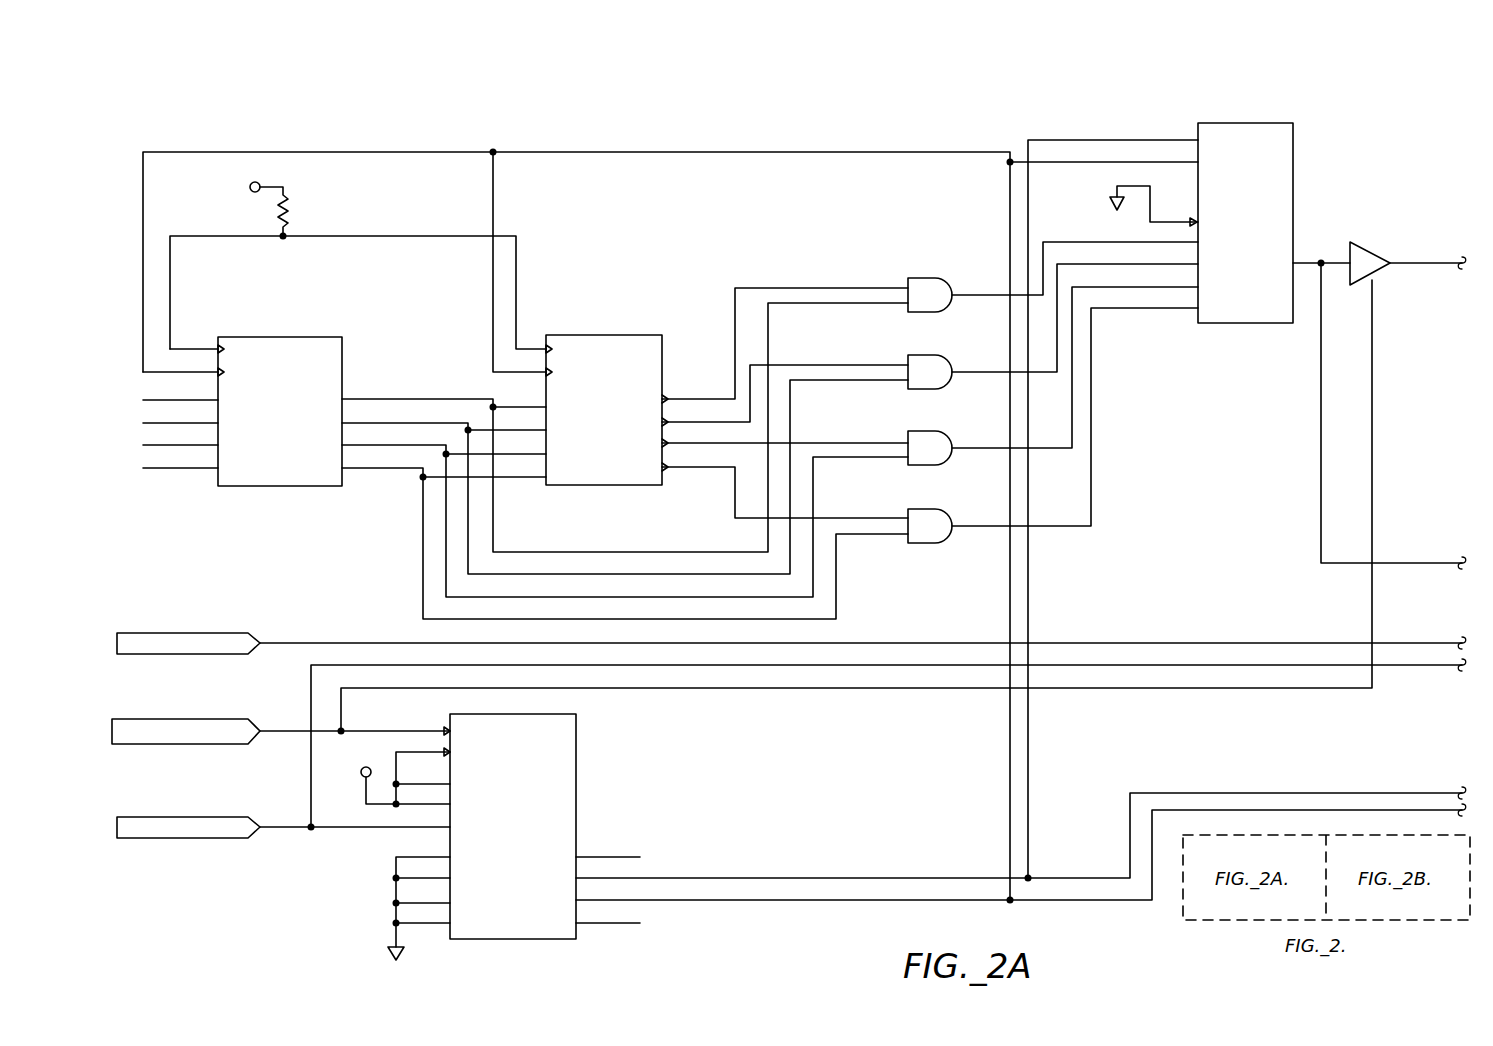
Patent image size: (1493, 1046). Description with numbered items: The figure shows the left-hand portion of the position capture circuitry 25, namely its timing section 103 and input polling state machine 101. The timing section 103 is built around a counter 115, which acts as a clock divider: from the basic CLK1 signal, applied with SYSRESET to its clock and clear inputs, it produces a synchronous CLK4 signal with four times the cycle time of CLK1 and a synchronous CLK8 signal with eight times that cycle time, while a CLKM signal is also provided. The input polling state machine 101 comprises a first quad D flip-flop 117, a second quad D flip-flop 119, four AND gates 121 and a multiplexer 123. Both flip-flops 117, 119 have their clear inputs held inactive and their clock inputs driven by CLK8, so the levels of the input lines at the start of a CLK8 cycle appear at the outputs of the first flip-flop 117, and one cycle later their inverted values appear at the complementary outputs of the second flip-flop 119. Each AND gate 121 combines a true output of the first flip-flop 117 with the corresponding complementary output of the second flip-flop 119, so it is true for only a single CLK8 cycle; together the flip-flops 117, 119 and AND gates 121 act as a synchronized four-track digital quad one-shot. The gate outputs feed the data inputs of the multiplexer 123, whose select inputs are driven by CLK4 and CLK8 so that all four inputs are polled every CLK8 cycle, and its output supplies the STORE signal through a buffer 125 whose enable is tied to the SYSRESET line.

The position capture circuitry 25 is at (212, 107).
The input polling state machine 101 is at (830, 712).
The timing section 103 is at (623, 938).
The counter 115 is at (577, 733).
The first quad D flip-flop 117 is at (283, 337).
The second quad D flip-flop 119 is at (600, 335).
The AND gates 121 is at (926, 272).
The multiplexer 123 is at (1250, 123).
The buffer 125 is at (1380, 270).